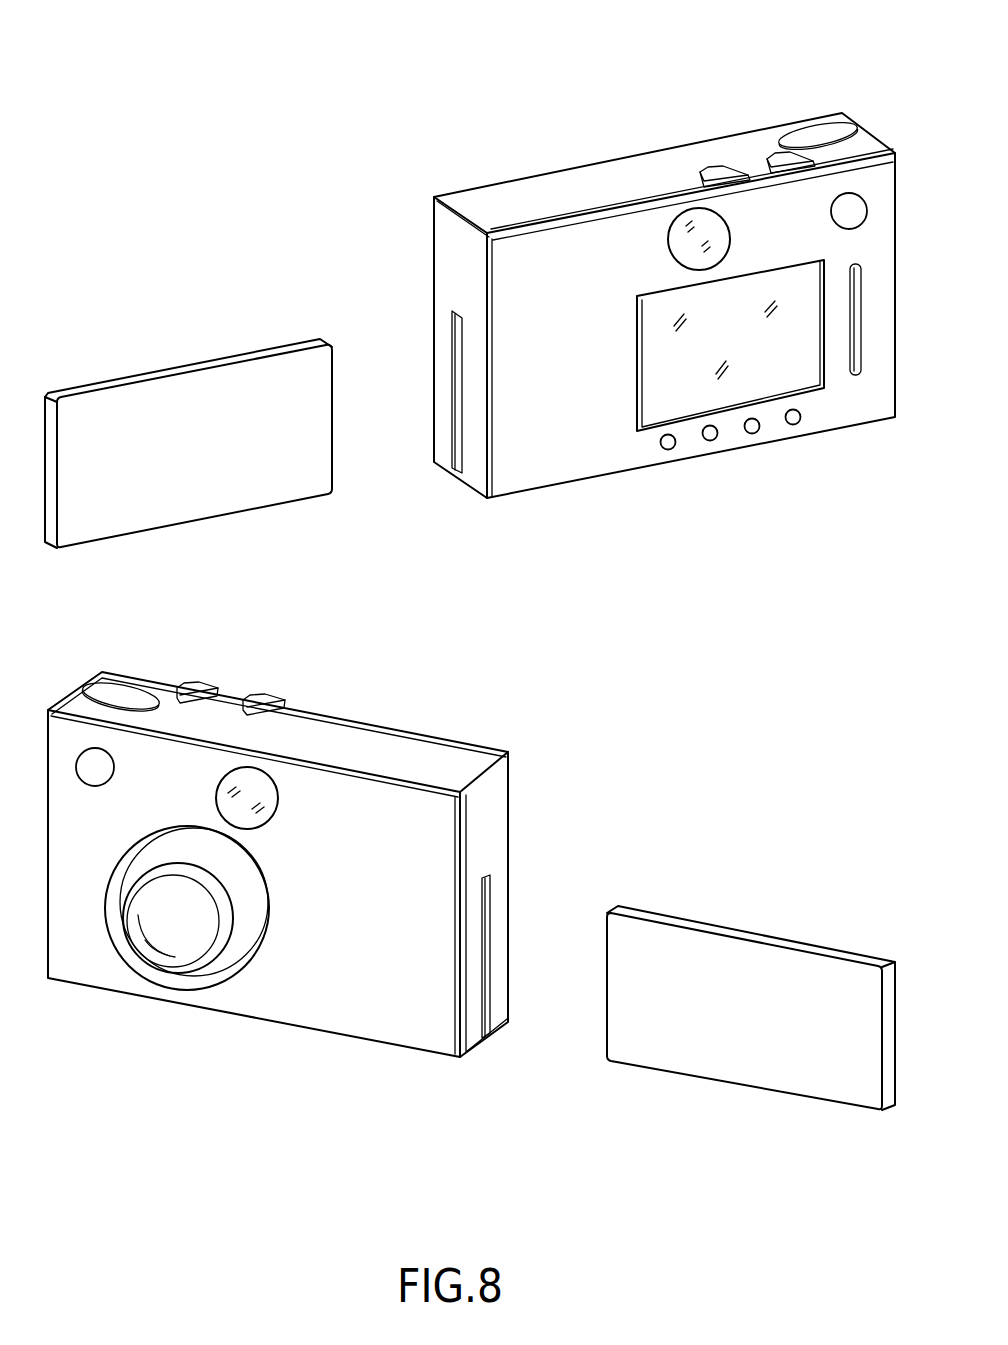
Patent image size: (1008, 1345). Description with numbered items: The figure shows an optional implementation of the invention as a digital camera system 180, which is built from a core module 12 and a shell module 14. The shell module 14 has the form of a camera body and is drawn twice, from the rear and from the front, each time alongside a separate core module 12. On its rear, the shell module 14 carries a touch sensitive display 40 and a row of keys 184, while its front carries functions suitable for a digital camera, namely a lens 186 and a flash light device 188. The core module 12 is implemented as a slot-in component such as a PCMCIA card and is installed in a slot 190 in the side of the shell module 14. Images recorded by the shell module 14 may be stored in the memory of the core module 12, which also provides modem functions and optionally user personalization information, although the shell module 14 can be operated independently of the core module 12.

The digital camera system 180 is at (270, 92).
The shell module 14 is at (630, 162).
The core module 12 is at (218, 358).
The touch sensitive display 40 is at (792, 362).
The keys 184 is at (672, 448).
The lens 186 is at (162, 932).
The flash light device 188 is at (256, 792).
The slot 190 is at (453, 423).